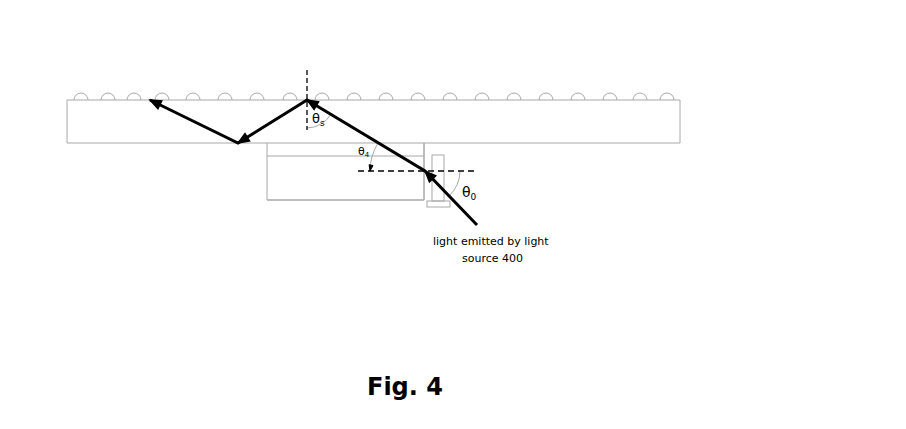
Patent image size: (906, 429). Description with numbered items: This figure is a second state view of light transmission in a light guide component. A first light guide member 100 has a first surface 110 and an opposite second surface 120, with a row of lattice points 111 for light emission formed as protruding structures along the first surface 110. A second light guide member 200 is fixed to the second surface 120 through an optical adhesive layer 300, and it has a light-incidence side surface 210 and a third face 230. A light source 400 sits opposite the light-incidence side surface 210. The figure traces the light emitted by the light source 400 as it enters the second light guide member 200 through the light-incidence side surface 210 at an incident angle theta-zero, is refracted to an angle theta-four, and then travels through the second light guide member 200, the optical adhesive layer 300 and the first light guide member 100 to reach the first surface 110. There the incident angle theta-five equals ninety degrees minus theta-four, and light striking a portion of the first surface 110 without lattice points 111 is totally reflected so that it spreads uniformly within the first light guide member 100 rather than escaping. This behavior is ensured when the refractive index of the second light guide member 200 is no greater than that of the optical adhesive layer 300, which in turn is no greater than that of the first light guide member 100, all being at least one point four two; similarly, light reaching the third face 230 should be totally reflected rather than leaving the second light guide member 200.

The first light guide member 100 is at (640, 112).
The first surface 110 is at (563, 100).
The lattice points 111 is at (353, 97).
The second surface 120 is at (558, 143).
The second light guide member 200 is at (299, 169).
The light-incidence side surface 210 is at (425, 183).
The third face 230 is at (307, 200).
The optical adhesive layer 300 is at (293, 148).
The light source 400 is at (439, 160).